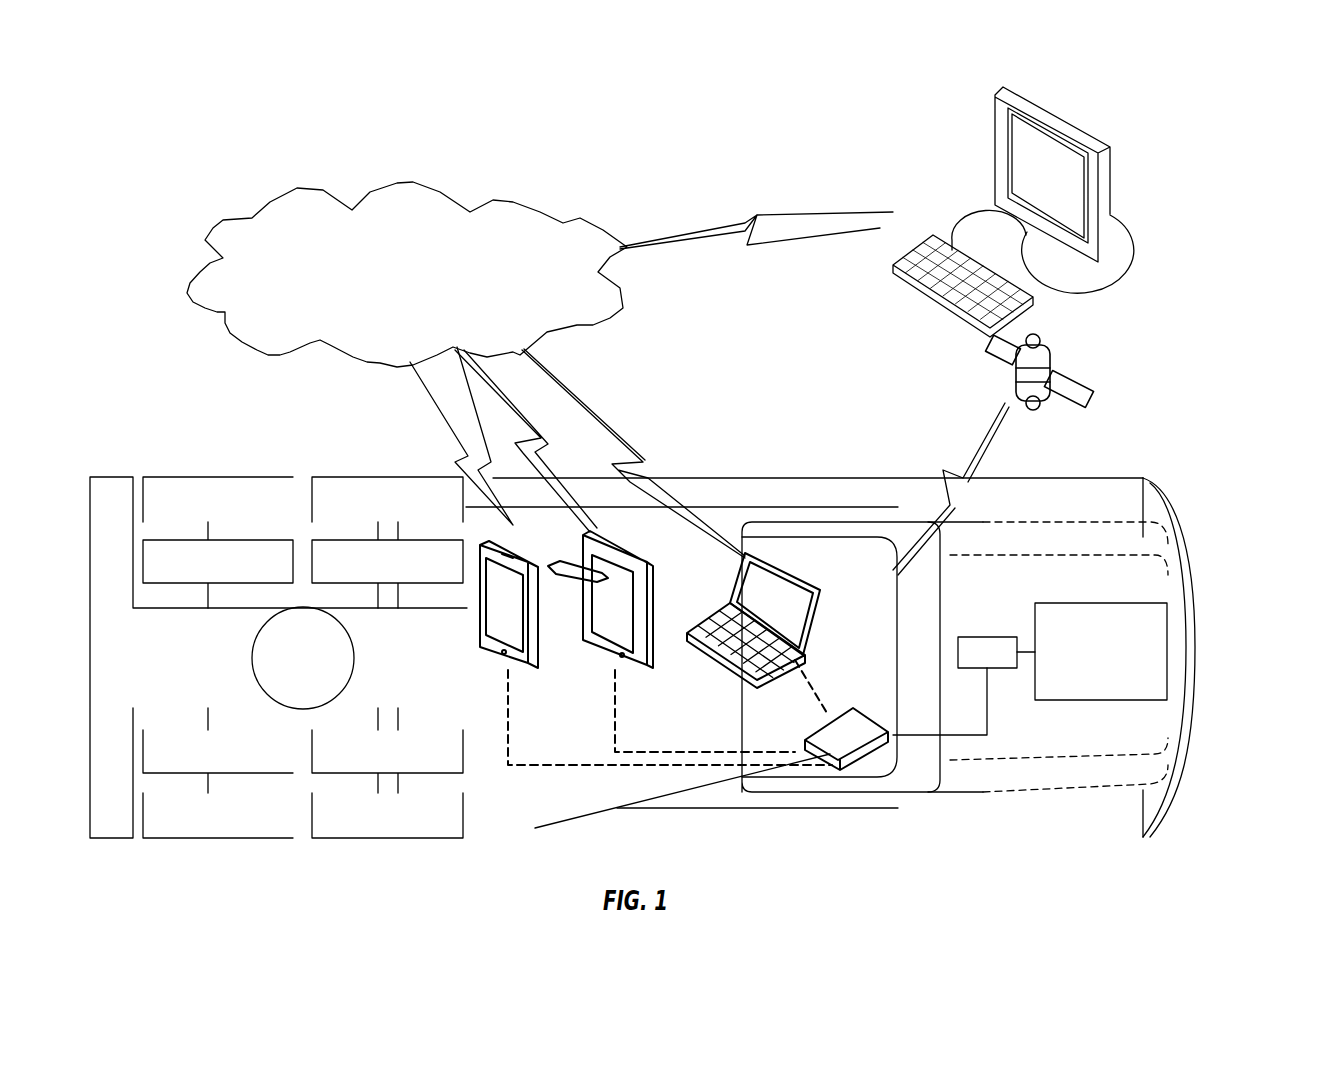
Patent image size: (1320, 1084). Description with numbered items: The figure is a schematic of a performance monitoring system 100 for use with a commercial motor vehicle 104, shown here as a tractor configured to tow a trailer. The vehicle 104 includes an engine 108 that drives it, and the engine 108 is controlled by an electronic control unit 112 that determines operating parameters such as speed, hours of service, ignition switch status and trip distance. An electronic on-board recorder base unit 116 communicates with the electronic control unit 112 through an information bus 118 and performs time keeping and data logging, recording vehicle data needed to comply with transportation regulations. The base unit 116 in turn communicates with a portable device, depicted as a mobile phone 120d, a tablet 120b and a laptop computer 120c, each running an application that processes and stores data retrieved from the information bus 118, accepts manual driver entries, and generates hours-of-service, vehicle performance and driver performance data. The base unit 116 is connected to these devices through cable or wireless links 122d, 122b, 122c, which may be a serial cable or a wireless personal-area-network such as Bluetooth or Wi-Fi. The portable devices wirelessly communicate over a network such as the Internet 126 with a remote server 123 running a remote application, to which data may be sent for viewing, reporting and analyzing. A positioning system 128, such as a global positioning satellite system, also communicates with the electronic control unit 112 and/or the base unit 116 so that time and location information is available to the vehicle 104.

The performance monitoring system 100 is at (1200, 138).
The commercial motor vehicle 104 is at (1090, 484).
The engine 108 is at (1093, 699).
The electronic control unit 112 is at (1003, 636).
The electronic on-board recorder base unit 116 is at (808, 733).
The information bus 118 is at (992, 721).
The tablet 120b is at (655, 603).
The laptop computer 120c is at (812, 642).
The mobile phone 120d is at (497, 658).
The cable or wireless link 122b is at (680, 750).
The cable or wireless link 122c is at (818, 688).
The connection from phone 122d is at (522, 768).
The remote server 123 is at (992, 158).
The internet 126 is at (590, 323).
The positioning system 128 is at (1103, 368).